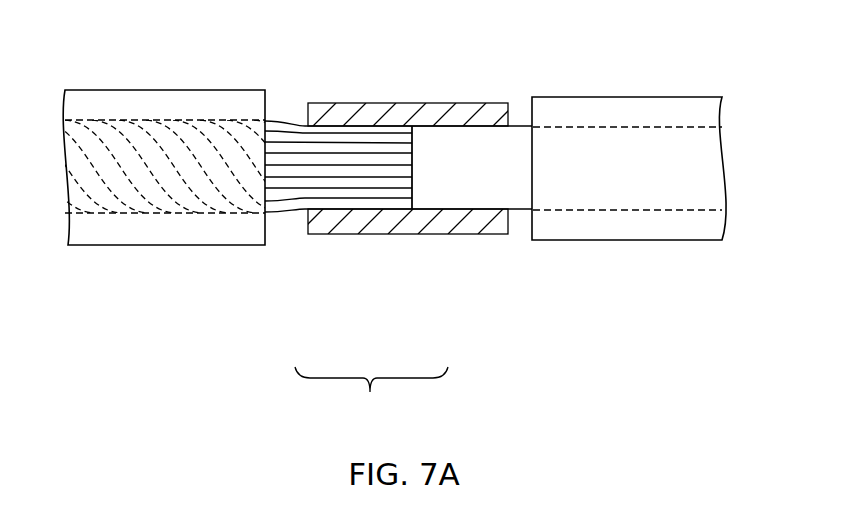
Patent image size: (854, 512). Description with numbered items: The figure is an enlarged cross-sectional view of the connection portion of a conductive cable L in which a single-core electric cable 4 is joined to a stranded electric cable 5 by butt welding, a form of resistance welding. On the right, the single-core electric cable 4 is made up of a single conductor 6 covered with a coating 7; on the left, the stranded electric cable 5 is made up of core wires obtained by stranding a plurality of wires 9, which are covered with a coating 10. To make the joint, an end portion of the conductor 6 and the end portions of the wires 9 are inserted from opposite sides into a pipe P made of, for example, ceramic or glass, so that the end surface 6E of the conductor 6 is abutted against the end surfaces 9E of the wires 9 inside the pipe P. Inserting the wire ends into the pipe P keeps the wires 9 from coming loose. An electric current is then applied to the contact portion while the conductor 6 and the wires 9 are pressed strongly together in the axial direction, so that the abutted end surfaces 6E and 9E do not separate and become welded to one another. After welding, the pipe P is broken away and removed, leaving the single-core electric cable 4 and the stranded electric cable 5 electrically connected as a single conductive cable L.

The coating 10 is at (162, 100).
The wires 9 is at (334, 157).
The pipe P is at (407, 110).
The conductor 6 is at (485, 150).
The coating 7 is at (630, 108).
The end surface of the conductor 6E is at (409, 182).
The end surfaces of the wires 9E is at (413, 168).
The stranded electric cable 5 is at (168, 232).
The single-core electric cable 4 is at (580, 228).
The conductive cable L is at (369, 400).